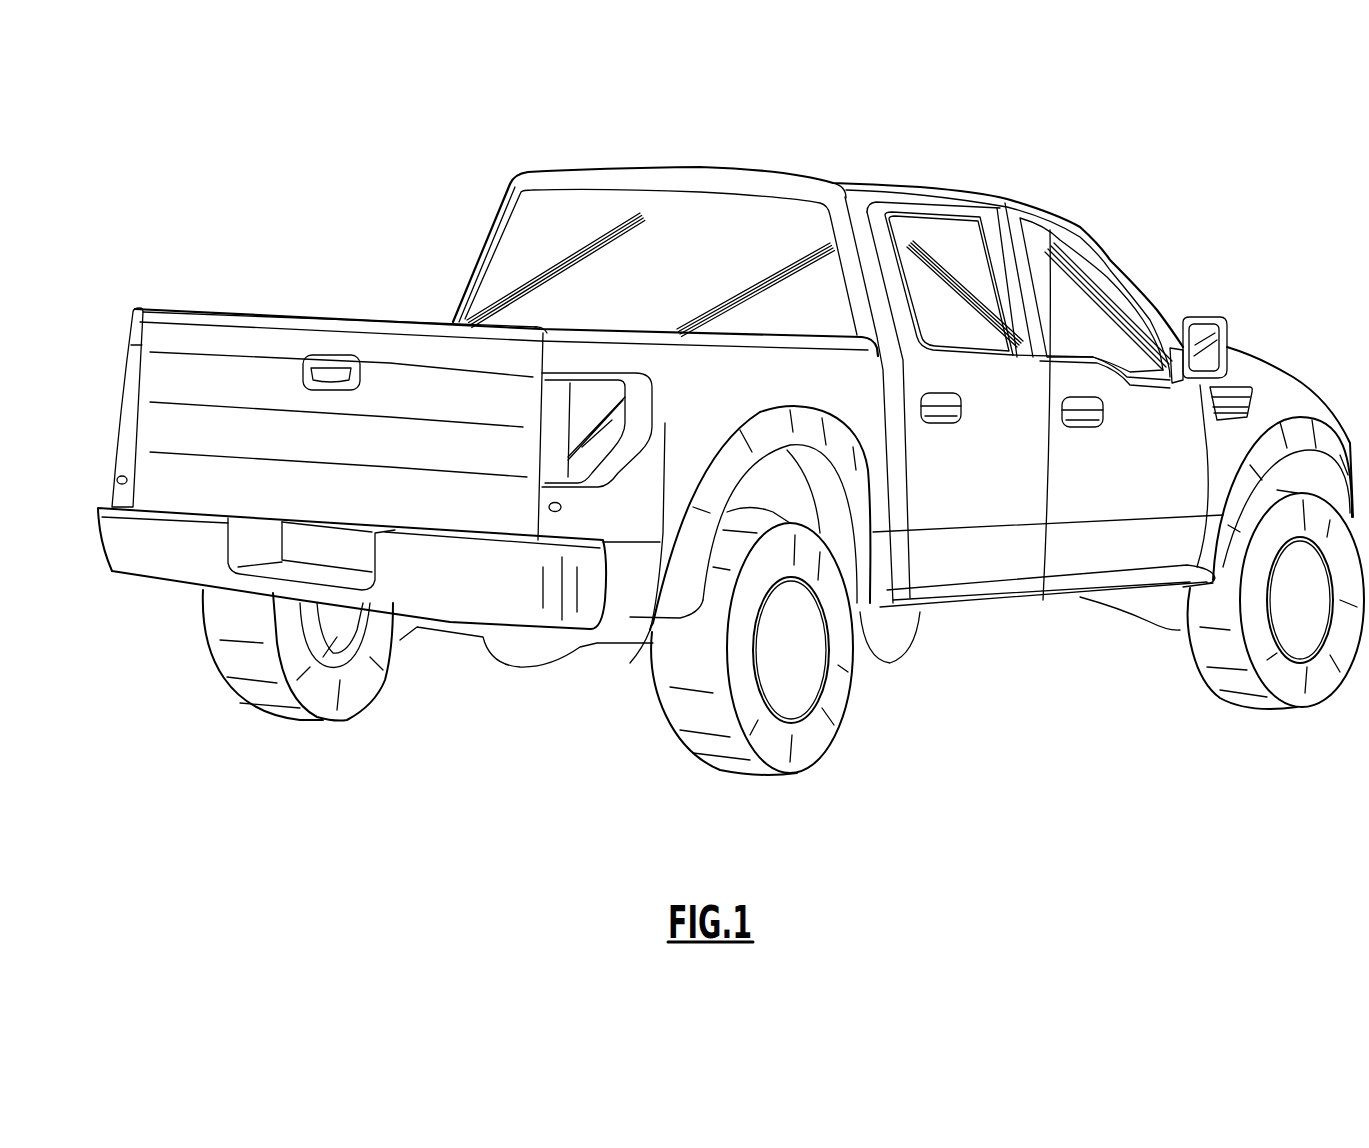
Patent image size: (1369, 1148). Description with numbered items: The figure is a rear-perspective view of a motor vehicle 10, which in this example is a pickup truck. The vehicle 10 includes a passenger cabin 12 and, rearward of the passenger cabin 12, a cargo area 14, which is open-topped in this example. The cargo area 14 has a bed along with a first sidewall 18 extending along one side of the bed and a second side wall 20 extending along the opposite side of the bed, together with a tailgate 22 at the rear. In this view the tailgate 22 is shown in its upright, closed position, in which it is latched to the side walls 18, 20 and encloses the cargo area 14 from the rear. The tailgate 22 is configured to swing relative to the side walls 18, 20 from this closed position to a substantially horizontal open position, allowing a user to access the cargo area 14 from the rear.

The motor vehicle 10 is at (664, 133).
The passenger cabin 12 is at (928, 174).
The cargo area 14 is at (338, 298).
The first sidewall 18 is at (652, 620).
The second side wall 20 is at (125, 329).
The tailgate 22 is at (180, 382).